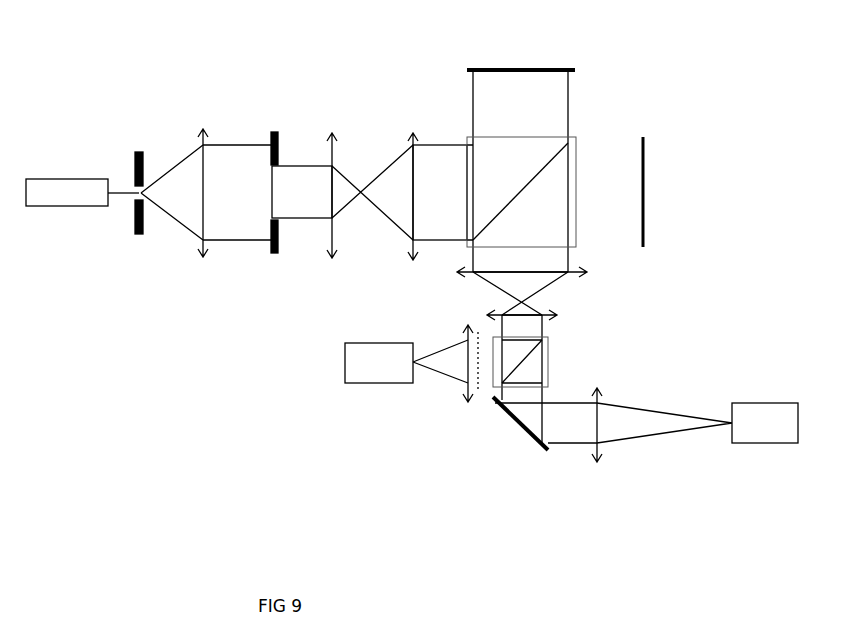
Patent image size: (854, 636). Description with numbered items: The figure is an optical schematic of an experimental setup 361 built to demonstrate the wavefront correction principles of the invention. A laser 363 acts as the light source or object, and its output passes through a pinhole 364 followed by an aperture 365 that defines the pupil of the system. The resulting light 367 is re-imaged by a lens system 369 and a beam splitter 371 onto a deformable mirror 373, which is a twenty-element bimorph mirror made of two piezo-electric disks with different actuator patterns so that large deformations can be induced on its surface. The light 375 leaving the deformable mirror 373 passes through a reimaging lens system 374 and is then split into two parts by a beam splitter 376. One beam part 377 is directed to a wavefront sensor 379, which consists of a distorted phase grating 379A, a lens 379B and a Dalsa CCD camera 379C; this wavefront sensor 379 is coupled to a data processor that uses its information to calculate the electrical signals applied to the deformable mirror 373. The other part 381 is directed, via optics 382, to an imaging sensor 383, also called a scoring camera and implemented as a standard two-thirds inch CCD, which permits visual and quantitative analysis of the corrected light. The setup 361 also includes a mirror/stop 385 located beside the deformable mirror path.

The experimental setup 361 is at (228, 400).
The laser 363 is at (50, 208).
The pinhole 364 is at (134, 159).
The aperture 365 is at (282, 245).
The light 367 is at (445, 145).
The lens system 369 is at (416, 104).
The beam splitter 371 is at (578, 147).
The deformable mirror 373 is at (553, 70).
The reimaging lens system 374 is at (600, 270).
The light 375 is at (572, 262).
The beam splitter 376 is at (548, 357).
The beam part 377 is at (489, 386).
The wavefront sensor 379 is at (392, 427).
The distorted phase grating 379A is at (482, 388).
The lens 379B is at (465, 385).
The Dalsa CCD camera 379C is at (370, 385).
The other part 381 is at (545, 395).
The optics 382 is at (525, 462).
The imaging sensor 383 is at (757, 440).
The mirror/stop 385 is at (647, 178).